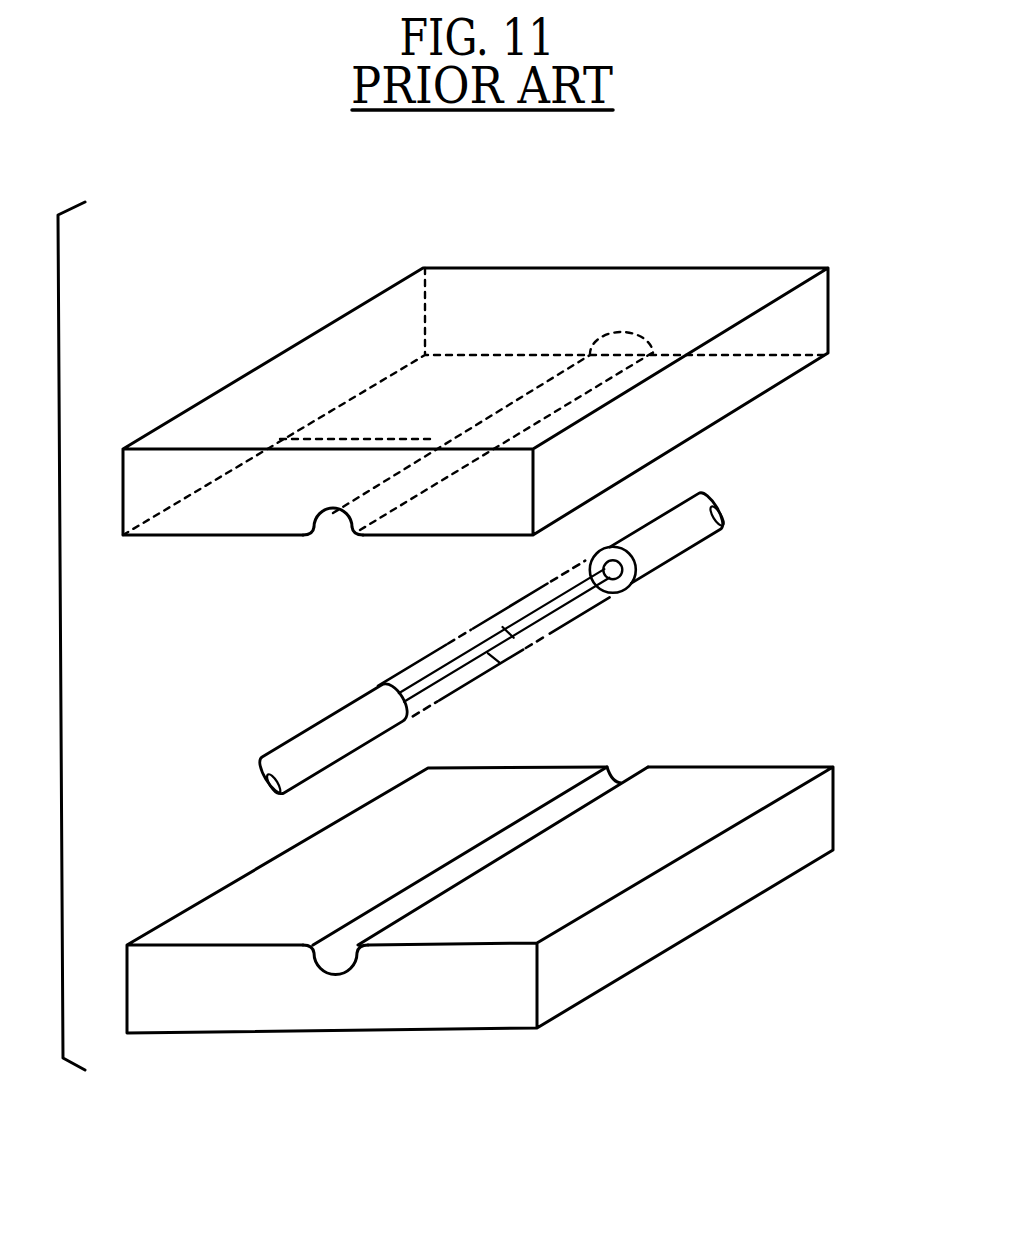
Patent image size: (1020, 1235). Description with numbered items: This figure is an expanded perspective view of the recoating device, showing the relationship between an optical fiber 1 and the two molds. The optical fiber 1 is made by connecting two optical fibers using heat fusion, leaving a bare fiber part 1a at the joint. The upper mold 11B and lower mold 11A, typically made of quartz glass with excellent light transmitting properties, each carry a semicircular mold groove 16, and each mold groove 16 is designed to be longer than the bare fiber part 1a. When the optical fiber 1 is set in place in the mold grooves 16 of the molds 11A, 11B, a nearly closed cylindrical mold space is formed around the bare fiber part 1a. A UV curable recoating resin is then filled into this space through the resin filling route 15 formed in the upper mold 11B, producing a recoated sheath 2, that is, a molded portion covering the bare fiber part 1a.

The optical fiber 1 is at (698, 558).
The bare fiber part 1a is at (495, 660).
The recoated sheath 2 is at (575, 610).
The lower mold 11A is at (768, 890).
The upper mold 11B is at (628, 266).
The resin filling route 15 is at (432, 437).
The mold groove 16 is at (334, 533).